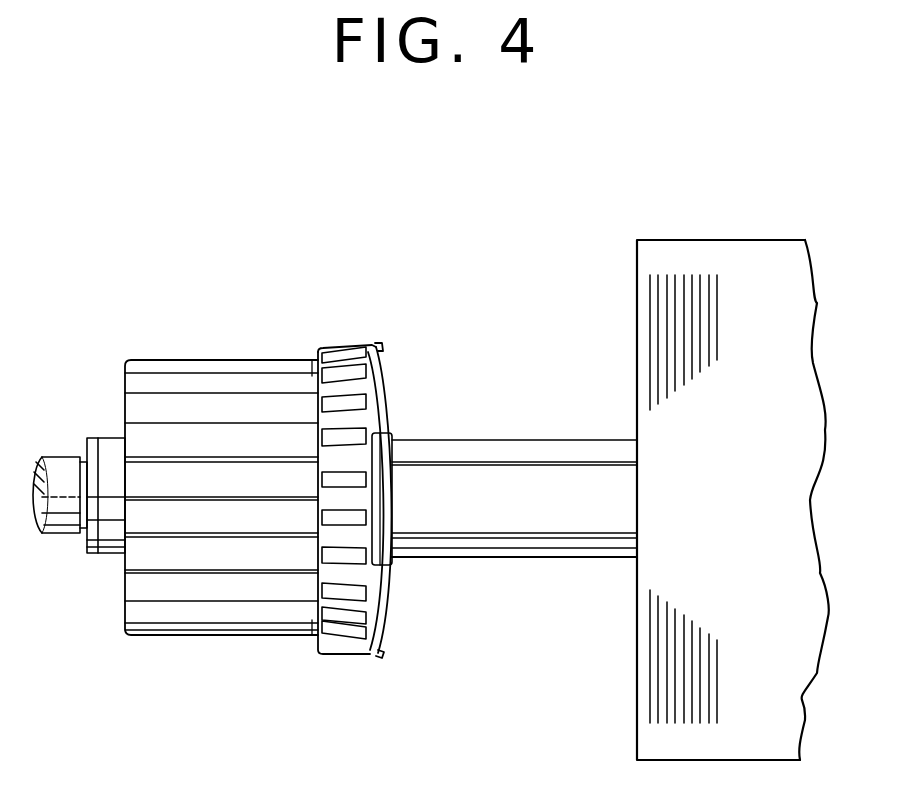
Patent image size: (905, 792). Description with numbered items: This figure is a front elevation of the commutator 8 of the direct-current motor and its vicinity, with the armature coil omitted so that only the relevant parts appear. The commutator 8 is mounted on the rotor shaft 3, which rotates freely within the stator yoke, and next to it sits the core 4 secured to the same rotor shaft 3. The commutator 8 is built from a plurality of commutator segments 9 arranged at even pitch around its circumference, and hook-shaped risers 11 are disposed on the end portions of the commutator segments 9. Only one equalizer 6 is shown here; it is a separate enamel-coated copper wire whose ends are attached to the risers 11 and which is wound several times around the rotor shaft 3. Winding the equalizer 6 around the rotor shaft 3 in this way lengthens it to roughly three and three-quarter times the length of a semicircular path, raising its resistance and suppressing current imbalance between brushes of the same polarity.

The rotor shaft 3 is at (543, 458).
The core 4 is at (720, 240).
The equalizer 6 is at (388, 393).
The commutator 8 is at (255, 353).
The commutator segments 9 is at (197, 362).
The risers 11 is at (342, 347).